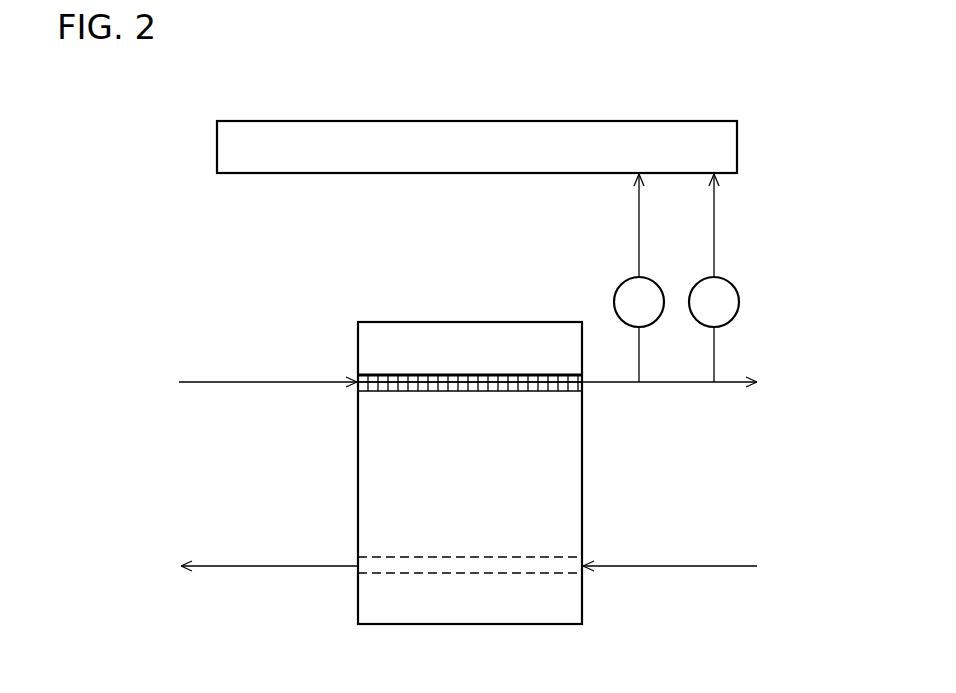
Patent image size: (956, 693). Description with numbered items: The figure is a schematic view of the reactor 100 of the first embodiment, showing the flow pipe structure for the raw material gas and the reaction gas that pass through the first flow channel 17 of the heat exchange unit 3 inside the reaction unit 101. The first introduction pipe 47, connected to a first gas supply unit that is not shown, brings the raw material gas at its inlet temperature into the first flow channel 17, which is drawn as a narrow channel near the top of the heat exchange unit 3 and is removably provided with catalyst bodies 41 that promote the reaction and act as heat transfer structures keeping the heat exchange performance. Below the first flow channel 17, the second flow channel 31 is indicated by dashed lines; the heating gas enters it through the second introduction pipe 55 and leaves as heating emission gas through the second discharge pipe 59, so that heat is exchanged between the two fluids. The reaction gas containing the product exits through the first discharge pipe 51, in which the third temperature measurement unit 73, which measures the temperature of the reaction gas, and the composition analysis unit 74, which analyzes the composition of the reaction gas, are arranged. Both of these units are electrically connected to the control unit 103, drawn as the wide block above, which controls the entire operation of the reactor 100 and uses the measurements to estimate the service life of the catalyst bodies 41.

The reactor 100 is at (147, 109).
The reaction unit 101 is at (524, 300).
The control unit 103 is at (664, 120).
The heat exchange unit 3 is at (435, 320).
The catalyst bodies 41 is at (532, 373).
The first flow channel 17 is at (457, 392).
The second flow channel 31 is at (450, 555).
The first introduction pipe 47 is at (267, 384).
The first discharge pipe 51 is at (668, 384).
The third temperature measurement unit 73 is at (650, 278).
The composition analysis unit 74 is at (727, 278).
The second introduction pipe 55 is at (667, 568).
The second discharge pipe 59 is at (268, 568).